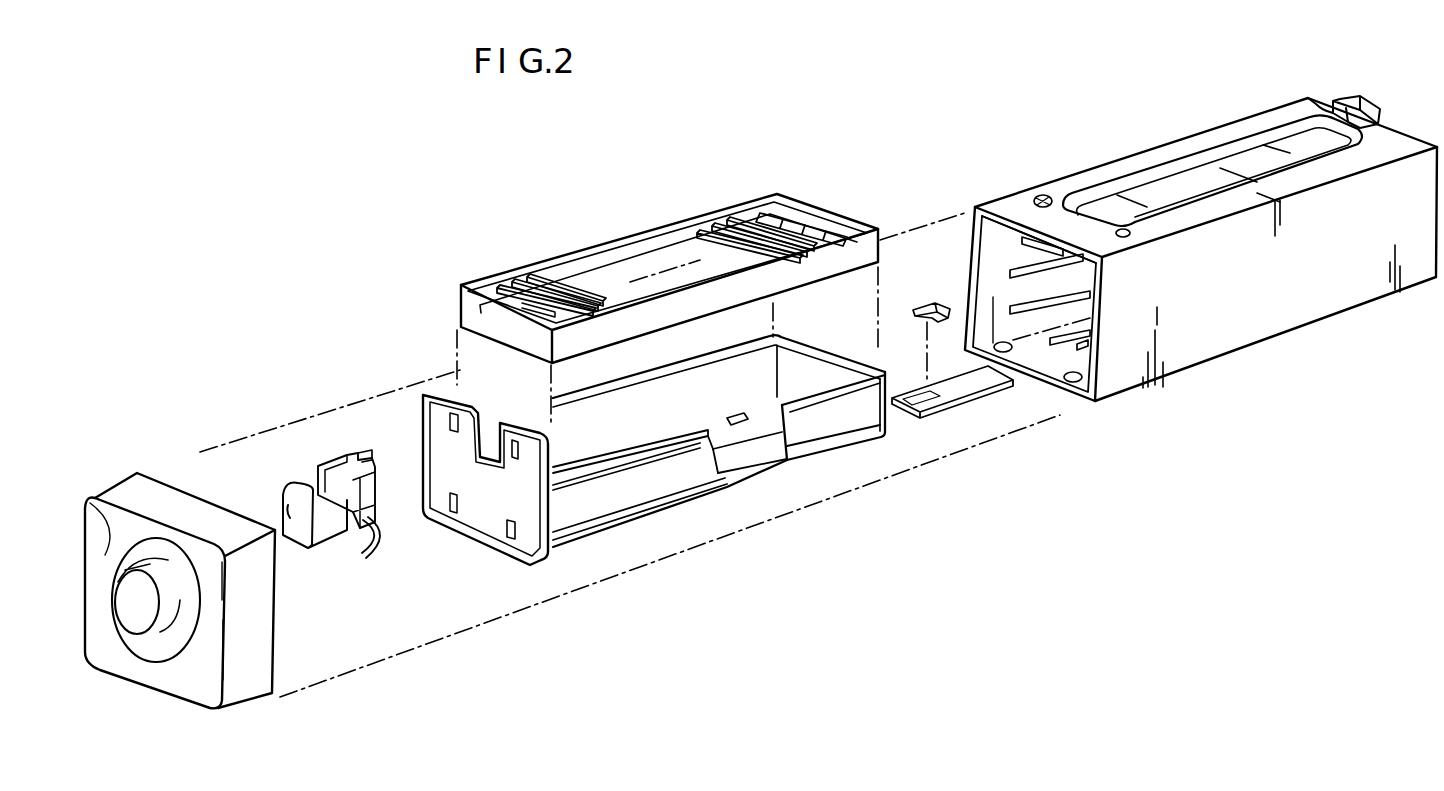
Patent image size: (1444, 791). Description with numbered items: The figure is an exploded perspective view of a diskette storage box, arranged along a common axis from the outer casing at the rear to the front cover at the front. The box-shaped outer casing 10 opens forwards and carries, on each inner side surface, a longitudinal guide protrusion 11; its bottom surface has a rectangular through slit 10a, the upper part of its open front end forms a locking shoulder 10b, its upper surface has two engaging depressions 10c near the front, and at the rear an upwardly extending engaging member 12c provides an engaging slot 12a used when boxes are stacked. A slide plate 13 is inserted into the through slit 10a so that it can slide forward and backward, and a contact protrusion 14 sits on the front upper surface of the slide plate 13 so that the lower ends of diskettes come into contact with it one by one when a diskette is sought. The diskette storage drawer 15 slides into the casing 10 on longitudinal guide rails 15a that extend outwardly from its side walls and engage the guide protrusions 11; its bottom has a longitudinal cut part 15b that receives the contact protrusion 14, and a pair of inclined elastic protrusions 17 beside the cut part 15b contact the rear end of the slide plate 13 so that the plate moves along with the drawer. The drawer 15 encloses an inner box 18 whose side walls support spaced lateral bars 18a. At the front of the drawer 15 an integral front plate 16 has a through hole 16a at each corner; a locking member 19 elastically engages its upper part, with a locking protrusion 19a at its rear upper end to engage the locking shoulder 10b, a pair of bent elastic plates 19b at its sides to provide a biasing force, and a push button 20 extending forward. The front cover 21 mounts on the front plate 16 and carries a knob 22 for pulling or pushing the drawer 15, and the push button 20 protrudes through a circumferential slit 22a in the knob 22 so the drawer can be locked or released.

The outer casing 10 is at (1316, 330).
The rectangular through slit 10a is at (1071, 383).
The locking shoulder 10b is at (1020, 248).
The engaging depressions 10c is at (1046, 195).
The longitudinal guide protrusions 11 is at (970, 252).
The engaging slot 12a is at (1325, 100).
The engaging member 12c is at (1360, 100).
The slide plate 13 is at (968, 388).
The contact protrusion 14 is at (928, 305).
The diskette storage drawer 15 is at (630, 530).
The longitudinal guide rail 15a is at (853, 437).
The longitudinal cut part 15b is at (734, 453).
The front plate 16 is at (480, 513).
The through holes 16a is at (508, 532).
The elastic protrusions 17 is at (750, 422).
The inner box 18 is at (651, 228).
The lateral bars 18a is at (563, 288).
The locking member 19 is at (347, 465).
The locking protrusion 19a is at (368, 452).
The elastic plates 19b is at (373, 557).
The push button 20 is at (290, 518).
The front cover 21 is at (103, 512).
The knob 22 is at (140, 615).
The circumferential slit 22a is at (78, 525).